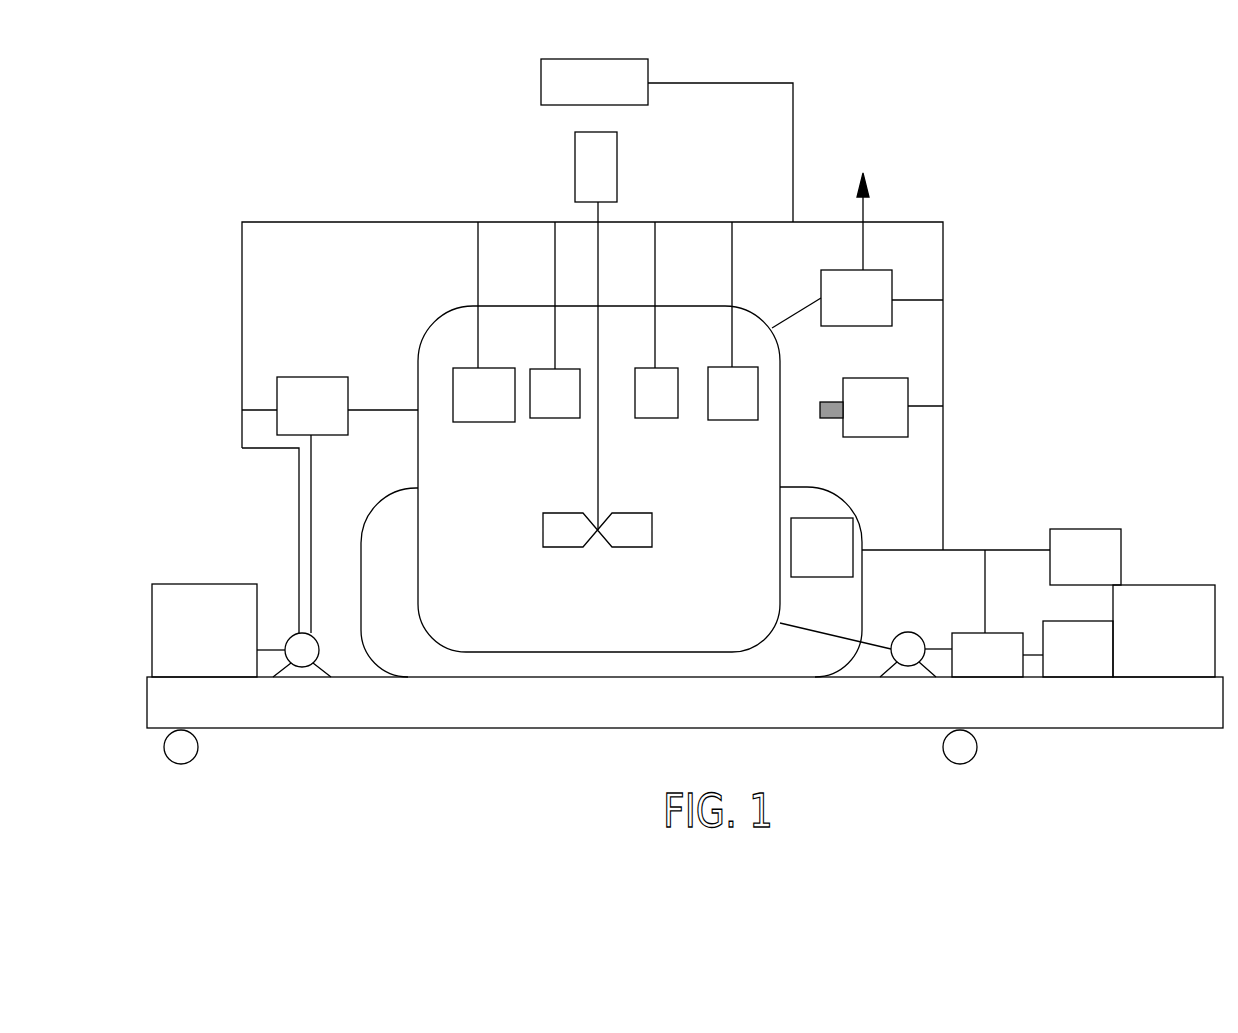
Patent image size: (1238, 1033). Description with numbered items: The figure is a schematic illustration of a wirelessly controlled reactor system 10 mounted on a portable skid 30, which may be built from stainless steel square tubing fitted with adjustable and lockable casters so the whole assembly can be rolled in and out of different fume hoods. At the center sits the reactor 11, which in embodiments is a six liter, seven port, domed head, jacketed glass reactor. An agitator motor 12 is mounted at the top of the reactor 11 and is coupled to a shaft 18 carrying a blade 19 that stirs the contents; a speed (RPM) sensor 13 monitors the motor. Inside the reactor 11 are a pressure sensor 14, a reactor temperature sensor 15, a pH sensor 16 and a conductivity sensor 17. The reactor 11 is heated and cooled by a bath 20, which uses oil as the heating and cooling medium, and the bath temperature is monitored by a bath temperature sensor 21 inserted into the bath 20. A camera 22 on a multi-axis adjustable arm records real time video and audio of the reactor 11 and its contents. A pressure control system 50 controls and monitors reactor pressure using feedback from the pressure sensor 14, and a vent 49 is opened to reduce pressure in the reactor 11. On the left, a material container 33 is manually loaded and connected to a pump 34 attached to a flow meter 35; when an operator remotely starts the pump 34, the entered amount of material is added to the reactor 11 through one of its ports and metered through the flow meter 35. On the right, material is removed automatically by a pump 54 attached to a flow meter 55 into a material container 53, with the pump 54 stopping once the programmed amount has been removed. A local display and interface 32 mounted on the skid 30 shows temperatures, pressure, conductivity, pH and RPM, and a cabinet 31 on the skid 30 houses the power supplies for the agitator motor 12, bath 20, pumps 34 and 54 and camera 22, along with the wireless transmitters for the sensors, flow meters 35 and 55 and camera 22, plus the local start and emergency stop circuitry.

The system 10 is at (298, 193).
The reactor 11 is at (418, 362).
The agitator motor 12 is at (575, 165).
The speed (RPM) sensor 13 is at (648, 72).
The pressure sensor 14 is at (486, 422).
The reactor temperature sensor 15 is at (540, 418).
The pH sensor 16 is at (668, 418).
The conductivity sensor 17 is at (736, 420).
The shaft 18 is at (598, 453).
The blade 19 is at (652, 530).
The bath 20 is at (862, 541).
The bath temperature sensor 21 is at (810, 577).
The camera 22 is at (900, 437).
The portable skid 30 is at (617, 716).
The cabinet 31 is at (1162, 585).
The local display and interface 32 is at (1085, 529).
The material container 33 is at (207, 584).
The pump 34 is at (297, 633).
The flow meter 35 is at (305, 377).
The vent 49 is at (866, 211).
The pressure control system 50 is at (833, 326).
The material container 53 is at (1043, 621).
The pump 54 is at (898, 636).
The flow meter 55 is at (972, 633).